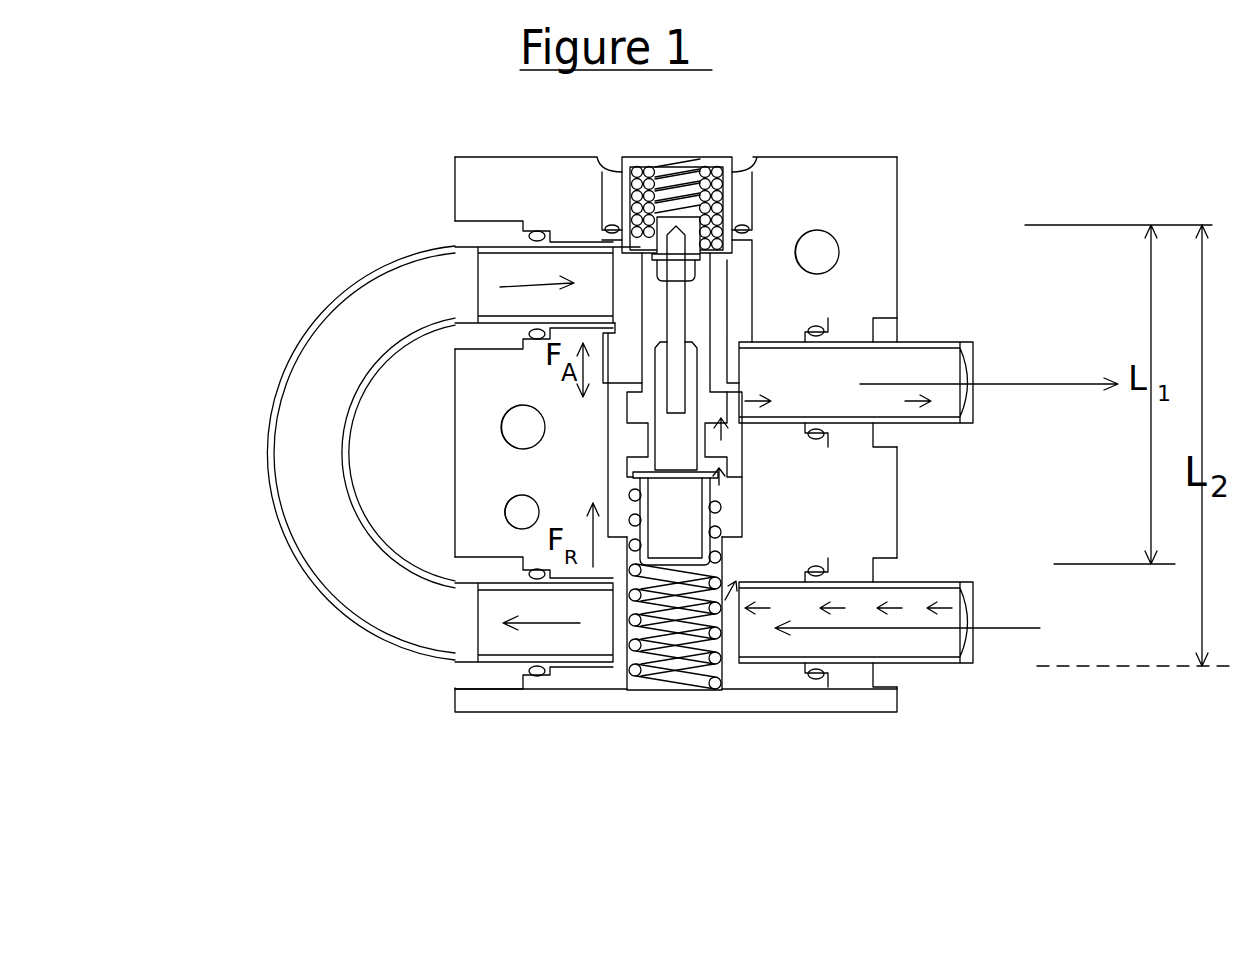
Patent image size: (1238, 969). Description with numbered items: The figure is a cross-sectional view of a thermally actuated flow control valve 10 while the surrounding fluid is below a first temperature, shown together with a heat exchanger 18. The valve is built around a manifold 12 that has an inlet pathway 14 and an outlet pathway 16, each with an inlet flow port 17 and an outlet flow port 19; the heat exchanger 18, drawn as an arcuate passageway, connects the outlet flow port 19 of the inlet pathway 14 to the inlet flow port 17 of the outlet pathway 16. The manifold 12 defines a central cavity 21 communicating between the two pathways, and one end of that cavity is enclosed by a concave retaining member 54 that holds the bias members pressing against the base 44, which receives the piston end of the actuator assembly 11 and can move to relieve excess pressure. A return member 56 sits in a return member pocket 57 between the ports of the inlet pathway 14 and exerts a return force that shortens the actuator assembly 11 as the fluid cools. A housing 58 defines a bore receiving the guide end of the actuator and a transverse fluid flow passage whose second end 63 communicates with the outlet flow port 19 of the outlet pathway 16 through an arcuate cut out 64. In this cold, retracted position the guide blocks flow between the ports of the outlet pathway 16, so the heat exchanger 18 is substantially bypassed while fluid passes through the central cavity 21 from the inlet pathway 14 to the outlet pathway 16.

The thermally actuated flow control valve 10 is at (724, 428).
The actuator assembly 11 is at (726, 480).
The manifold 12 is at (892, 147).
The inlet pathway 14 is at (781, 622).
The outlet pathway 16 is at (778, 335).
The inlet flow port 17 is at (577, 248).
The heat exchanger 18 is at (270, 425).
The outlet flow port 19 is at (898, 332).
The central cavity 21 is at (622, 447).
The base 44 is at (712, 250).
The concave retaining member 54 is at (721, 157).
The return member 56 is at (673, 673).
The return member pocket 57 is at (633, 683).
The housing 58 is at (625, 372).
The second end 63 is at (722, 258).
The arcuate cut out 64 is at (723, 321).